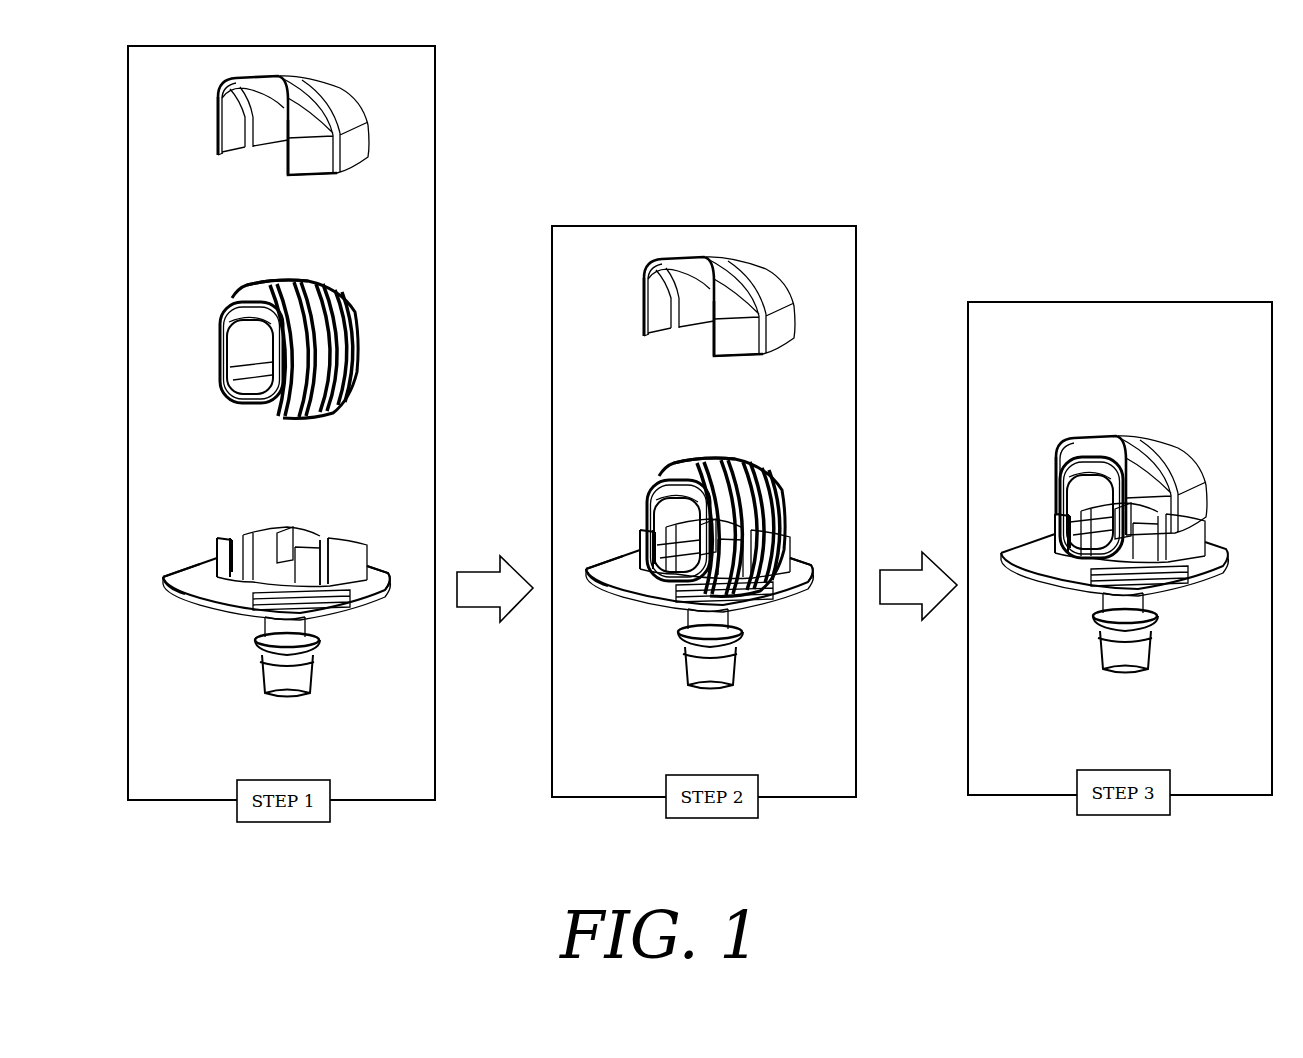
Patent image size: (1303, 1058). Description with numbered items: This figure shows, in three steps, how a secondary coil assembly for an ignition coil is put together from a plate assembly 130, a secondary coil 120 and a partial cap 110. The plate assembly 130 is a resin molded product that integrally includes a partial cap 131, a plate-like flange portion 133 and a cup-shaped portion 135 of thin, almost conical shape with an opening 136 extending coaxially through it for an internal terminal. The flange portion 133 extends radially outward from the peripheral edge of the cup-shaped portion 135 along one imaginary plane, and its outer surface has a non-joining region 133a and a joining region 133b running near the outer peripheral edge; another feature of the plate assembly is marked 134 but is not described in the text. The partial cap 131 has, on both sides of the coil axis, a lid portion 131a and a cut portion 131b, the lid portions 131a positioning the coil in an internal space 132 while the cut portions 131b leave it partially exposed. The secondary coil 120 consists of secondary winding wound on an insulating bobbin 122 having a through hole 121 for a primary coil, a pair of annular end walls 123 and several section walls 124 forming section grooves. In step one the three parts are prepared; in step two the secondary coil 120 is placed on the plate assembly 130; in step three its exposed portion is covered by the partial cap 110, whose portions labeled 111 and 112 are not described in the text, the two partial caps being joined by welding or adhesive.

The partial cap 110 is at (688, 305).
The cap side wall 111 is at (218, 123).
The cap lower edge 112 is at (325, 176).
The secondary coil 120 is at (643, 414).
The through hole 121 is at (233, 343).
The insulating bobbin 122 is at (222, 304).
The annular end walls 123 is at (362, 336).
The section walls 124 is at (263, 283).
The plate assembly 130 is at (687, 593).
The partial cap 131 is at (693, 534).
The lid portion 131a is at (218, 538).
The cut portion 131b is at (232, 536).
The internal space 132 is at (293, 537).
The plate-like flange portion 133 is at (687, 575).
The non-joining region 133a is at (185, 560).
The joining region 133b is at (385, 577).
The flange plate edge 134 is at (807, 556).
The cup-shaped portion 135 is at (330, 614).
The opening 136 is at (302, 670).